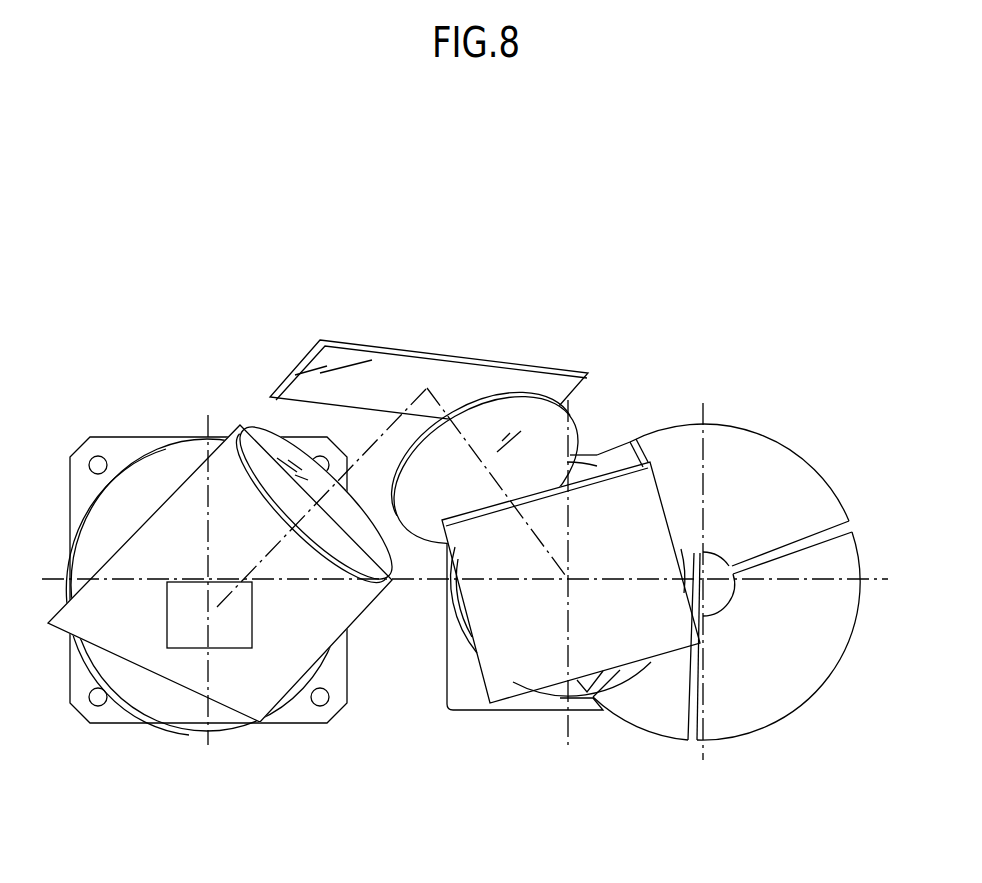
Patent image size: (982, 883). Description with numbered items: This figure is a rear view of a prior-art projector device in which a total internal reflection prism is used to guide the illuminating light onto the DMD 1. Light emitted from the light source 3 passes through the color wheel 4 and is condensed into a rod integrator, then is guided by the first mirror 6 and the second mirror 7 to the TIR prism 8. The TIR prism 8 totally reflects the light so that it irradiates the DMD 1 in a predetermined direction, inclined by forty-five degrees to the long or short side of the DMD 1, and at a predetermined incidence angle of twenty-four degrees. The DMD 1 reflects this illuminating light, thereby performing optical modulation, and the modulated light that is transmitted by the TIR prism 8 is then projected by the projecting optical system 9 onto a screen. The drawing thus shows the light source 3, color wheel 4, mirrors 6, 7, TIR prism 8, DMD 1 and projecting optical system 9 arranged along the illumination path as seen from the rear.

The DMD 1 is at (235, 635).
The light source 3 is at (553, 695).
The color wheel 4 is at (763, 458).
The first mirror 6 is at (510, 683).
The second mirror 7 is at (400, 375).
The TIR prism 8 is at (272, 680).
The projecting optical system 9 is at (157, 478).